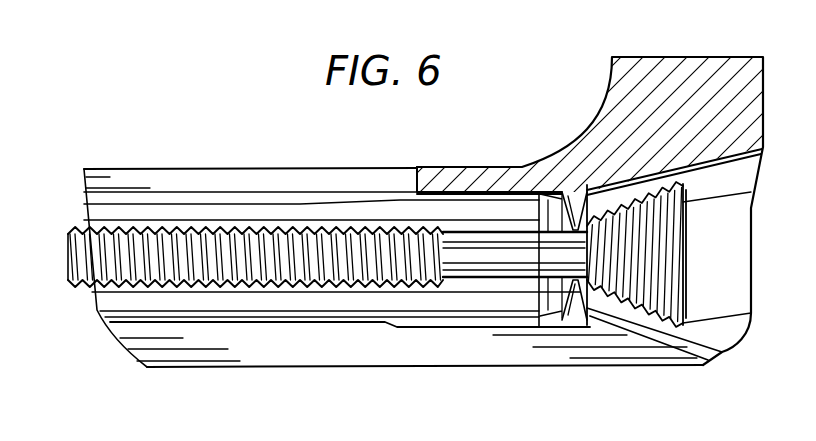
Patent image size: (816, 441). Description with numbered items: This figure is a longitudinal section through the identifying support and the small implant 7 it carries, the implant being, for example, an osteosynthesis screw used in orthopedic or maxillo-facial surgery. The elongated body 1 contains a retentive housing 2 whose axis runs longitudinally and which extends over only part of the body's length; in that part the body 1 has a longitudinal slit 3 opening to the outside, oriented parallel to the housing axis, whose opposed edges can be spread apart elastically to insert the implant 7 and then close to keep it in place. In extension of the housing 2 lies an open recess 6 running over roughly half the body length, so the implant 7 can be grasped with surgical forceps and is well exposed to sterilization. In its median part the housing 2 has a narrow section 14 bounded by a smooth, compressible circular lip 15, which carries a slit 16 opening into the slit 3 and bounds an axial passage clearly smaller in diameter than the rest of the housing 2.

The body 1 is at (726, 63).
The retentive housing 2 is at (322, 204).
The longitudinal slit 3 is at (358, 379).
The open recess 6 is at (192, 181).
The small implant 7 is at (70, 285).
The narrow section 14 is at (587, 224).
The smooth circular lip 15 is at (571, 206).
The slit 16 is at (578, 310).